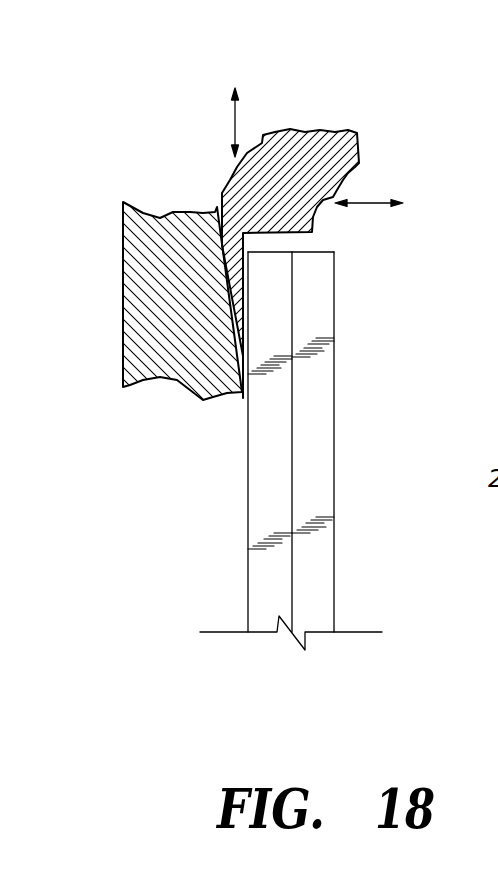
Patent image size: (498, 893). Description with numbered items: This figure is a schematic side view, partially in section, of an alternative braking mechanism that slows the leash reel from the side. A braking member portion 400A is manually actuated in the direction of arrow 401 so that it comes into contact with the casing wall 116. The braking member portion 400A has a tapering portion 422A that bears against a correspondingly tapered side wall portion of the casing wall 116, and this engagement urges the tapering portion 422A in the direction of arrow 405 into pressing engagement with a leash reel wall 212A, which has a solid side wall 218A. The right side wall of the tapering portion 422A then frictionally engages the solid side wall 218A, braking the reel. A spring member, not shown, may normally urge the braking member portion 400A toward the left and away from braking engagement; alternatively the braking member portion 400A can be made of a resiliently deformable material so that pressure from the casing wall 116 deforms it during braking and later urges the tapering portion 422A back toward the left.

The casing wall 116 is at (142, 217).
The braking member portion 400A is at (320, 137).
The arrow 401 is at (233, 122).
The arrow 405 is at (375, 203).
The leash reel wall 212A is at (293, 425).
The solid side wall 218A is at (248, 490).
The tapering portion 422A is at (238, 303).